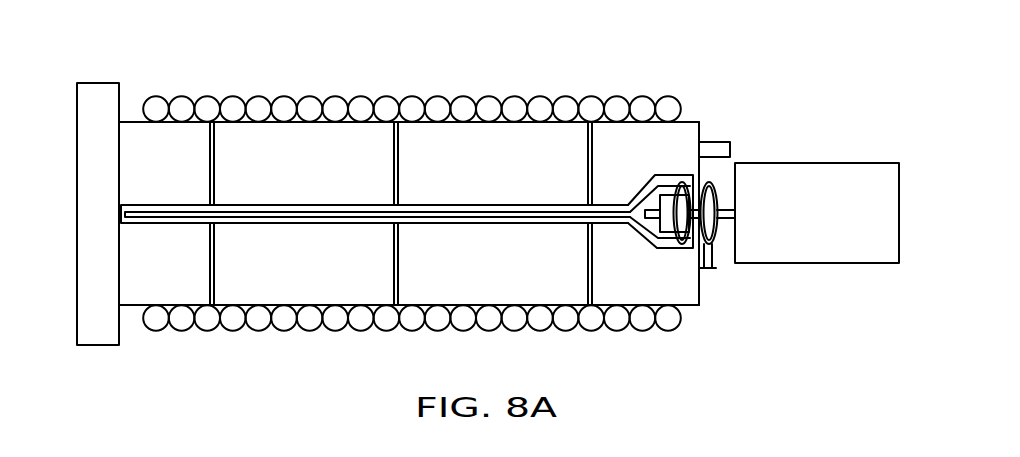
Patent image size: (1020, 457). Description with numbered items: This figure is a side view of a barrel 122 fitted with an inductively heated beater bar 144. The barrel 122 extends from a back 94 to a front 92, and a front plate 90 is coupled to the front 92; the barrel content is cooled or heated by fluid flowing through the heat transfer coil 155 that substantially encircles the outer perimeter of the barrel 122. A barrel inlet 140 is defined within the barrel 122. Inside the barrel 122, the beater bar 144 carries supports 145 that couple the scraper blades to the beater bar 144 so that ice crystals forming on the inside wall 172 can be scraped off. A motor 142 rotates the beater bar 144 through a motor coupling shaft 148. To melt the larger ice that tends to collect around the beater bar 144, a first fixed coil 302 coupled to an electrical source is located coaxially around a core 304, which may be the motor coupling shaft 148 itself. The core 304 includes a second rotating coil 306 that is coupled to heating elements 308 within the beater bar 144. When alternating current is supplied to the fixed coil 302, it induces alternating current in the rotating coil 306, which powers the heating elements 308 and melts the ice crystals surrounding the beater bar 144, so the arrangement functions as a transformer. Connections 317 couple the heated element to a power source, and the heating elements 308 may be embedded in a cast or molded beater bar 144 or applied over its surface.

The front plate 90 is at (85, 120).
The front 92 is at (135, 45).
The barrel 122 is at (130, 100).
The inside wall 172 is at (136, 303).
The back 94 is at (693, 317).
The heat transfer coil 155 is at (257, 110).
The supports 145 is at (397, 158).
The heating elements 308 is at (467, 198).
The beater bar 144 is at (605, 203).
The second rotating coil 306 is at (668, 250).
The motor coupling shaft 148 is at (725, 188).
The core 304 is at (785, 185).
The barrel inlet 140 is at (717, 147).
The motor 142 is at (823, 265).
The first fixed coil 302 is at (725, 254).
The connections 317 is at (710, 274).